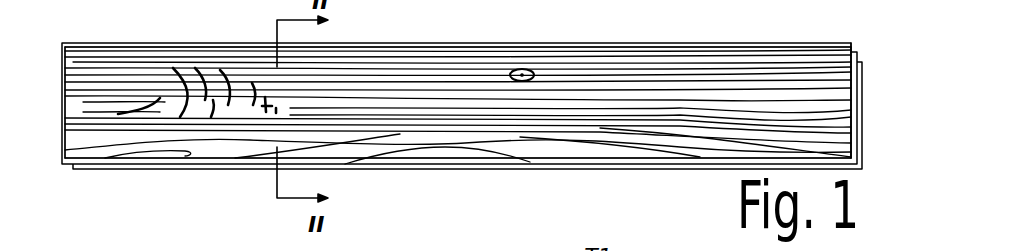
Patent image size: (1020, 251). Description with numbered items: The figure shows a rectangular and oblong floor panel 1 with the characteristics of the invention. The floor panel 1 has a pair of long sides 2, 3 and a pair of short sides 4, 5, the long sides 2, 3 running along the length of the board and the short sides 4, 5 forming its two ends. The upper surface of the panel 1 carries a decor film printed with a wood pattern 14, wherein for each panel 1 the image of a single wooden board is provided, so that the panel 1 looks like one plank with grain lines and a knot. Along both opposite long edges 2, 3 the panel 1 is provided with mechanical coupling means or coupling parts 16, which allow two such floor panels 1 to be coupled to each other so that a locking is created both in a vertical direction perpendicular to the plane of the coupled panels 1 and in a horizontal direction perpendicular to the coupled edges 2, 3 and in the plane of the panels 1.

The floor panel 1 is at (157, 183).
The long side 2 is at (423, 39).
The long side 3 is at (413, 180).
The short side 4 is at (48, 153).
The short side 5 is at (872, 170).
The wood pattern 14 is at (578, 58).
The mechanical coupling means 16 is at (63, 63).